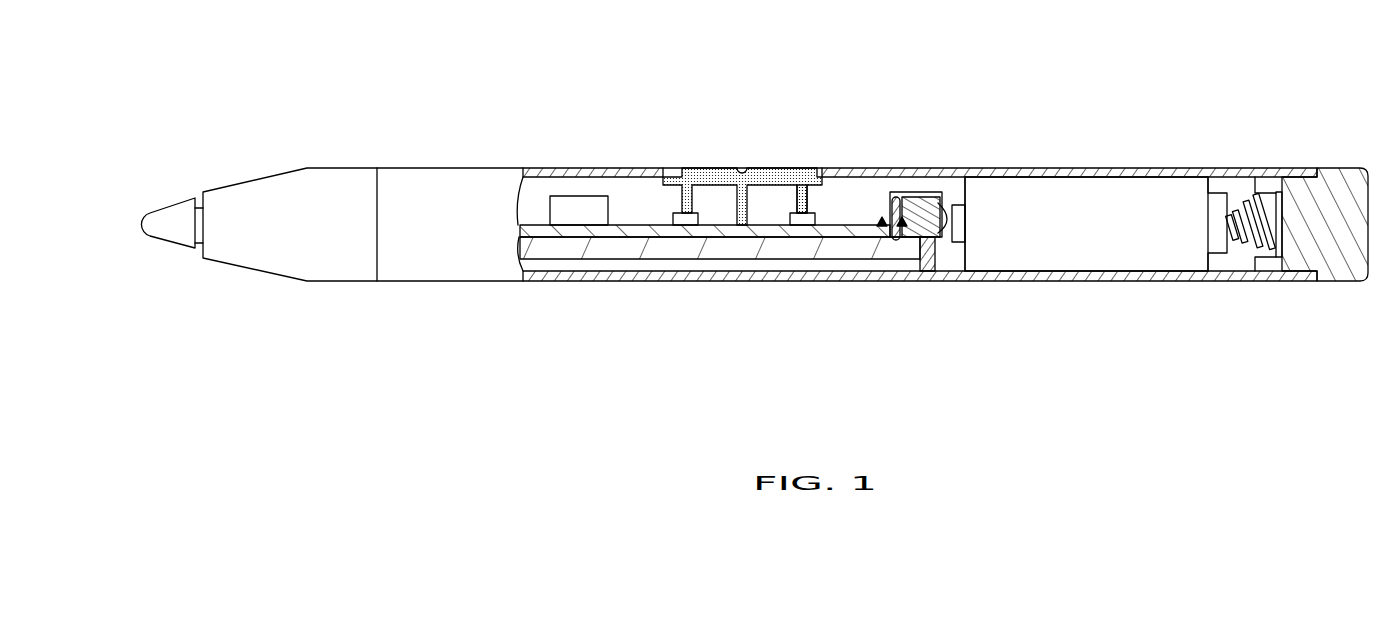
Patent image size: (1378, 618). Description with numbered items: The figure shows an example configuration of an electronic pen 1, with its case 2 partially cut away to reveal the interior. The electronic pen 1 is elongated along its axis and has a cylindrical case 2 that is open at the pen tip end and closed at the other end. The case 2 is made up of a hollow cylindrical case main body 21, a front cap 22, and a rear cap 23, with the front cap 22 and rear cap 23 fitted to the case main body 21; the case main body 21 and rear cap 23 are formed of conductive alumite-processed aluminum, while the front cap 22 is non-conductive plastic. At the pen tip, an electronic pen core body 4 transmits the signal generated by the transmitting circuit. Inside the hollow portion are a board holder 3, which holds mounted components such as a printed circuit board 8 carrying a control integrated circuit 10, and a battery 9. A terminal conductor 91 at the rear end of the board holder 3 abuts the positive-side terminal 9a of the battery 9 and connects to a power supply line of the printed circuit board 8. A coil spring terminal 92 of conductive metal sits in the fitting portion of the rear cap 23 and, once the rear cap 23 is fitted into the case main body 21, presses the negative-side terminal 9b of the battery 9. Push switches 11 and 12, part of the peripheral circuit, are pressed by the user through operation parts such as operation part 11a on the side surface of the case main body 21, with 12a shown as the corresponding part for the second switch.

The electronic pen 1 is at (608, 31).
The case 2 is at (998, 288).
The board holder 3 is at (803, 248).
The electronic pen core body 4 is at (155, 228).
The printed circuit board 8 is at (850, 225).
The battery 9 is at (1120, 262).
The positive-side terminal 9a is at (958, 233).
The negative-side terminal 9b is at (1232, 247).
The control integrated circuit 10 is at (580, 207).
The push switch 11 is at (685, 225).
The operation part 11a is at (700, 172).
The push switch 12 is at (818, 225).
The second charging terminal 12a is at (783, 170).
The case main body 21 is at (1040, 173).
The front cap 22 is at (280, 182).
The rear cap 23 is at (1333, 262).
The terminal conductor 91 is at (915, 195).
The coil spring terminal 92 is at (1238, 210).